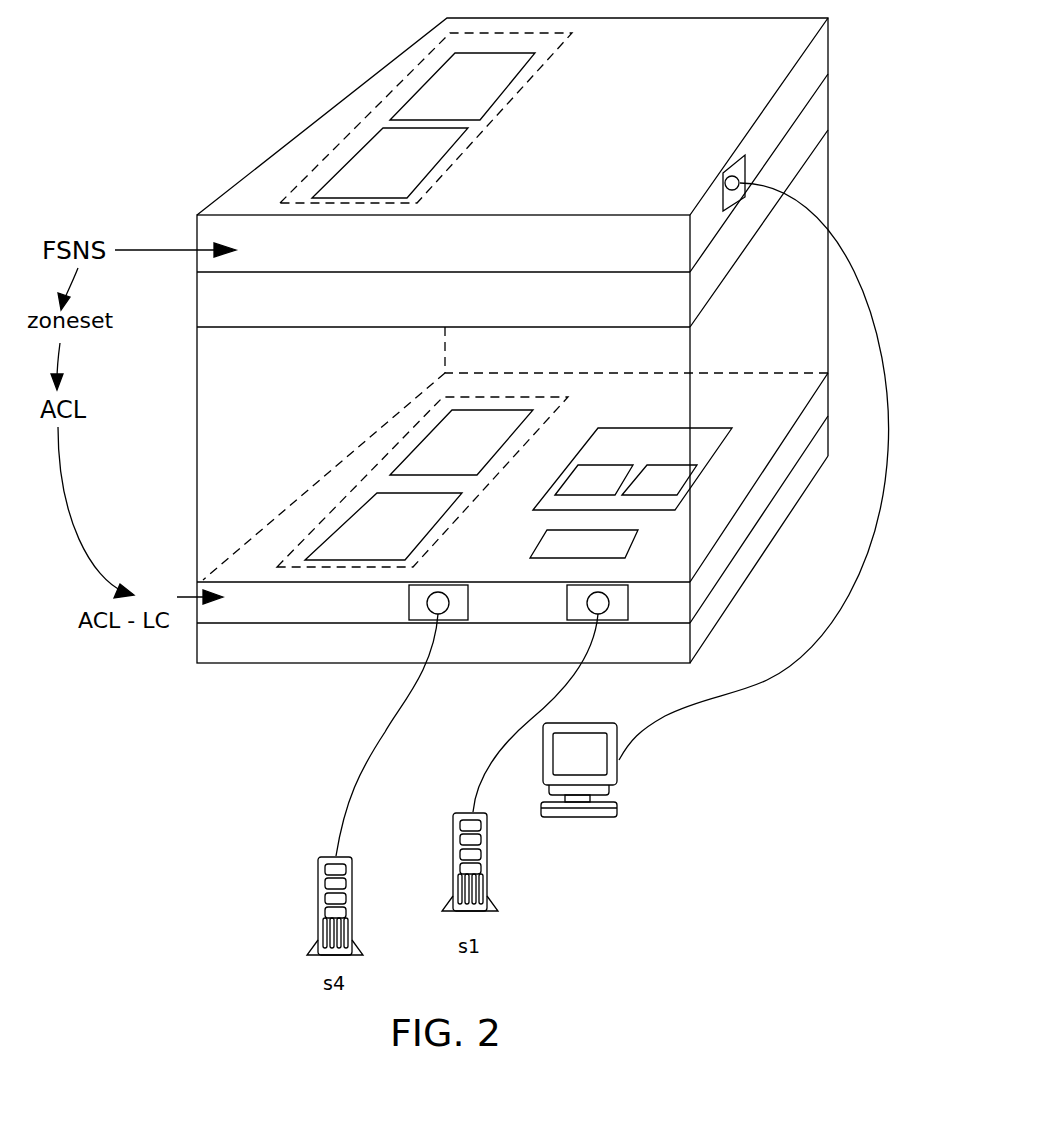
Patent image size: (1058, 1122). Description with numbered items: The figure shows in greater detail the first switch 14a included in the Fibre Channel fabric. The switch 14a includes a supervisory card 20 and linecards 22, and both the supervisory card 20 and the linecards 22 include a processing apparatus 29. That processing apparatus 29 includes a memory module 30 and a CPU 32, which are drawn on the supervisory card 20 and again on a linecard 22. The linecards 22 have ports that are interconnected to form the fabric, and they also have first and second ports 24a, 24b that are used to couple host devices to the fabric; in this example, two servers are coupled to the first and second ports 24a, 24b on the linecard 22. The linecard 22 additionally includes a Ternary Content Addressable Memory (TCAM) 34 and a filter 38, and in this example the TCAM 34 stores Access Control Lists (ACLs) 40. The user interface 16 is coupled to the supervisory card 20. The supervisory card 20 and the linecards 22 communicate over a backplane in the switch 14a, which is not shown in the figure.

The first switch 14a is at (310, 87).
The supervisory card 20 is at (387, 247).
The linecards 22 is at (448, 454).
The processing apparatus 29 is at (522, 92).
The memory module 30 is at (462, 264).
The CPU 32 is at (386, 344).
The Ternary Content Addressable Memory (TCAM) 34 is at (632, 469).
The filter 38 is at (628, 545).
The Access Control Lists (ACLs) 40 is at (683, 472).
The first port 24a is at (585, 603).
The second port 24b is at (457, 610).
The user interface 16 is at (620, 765).